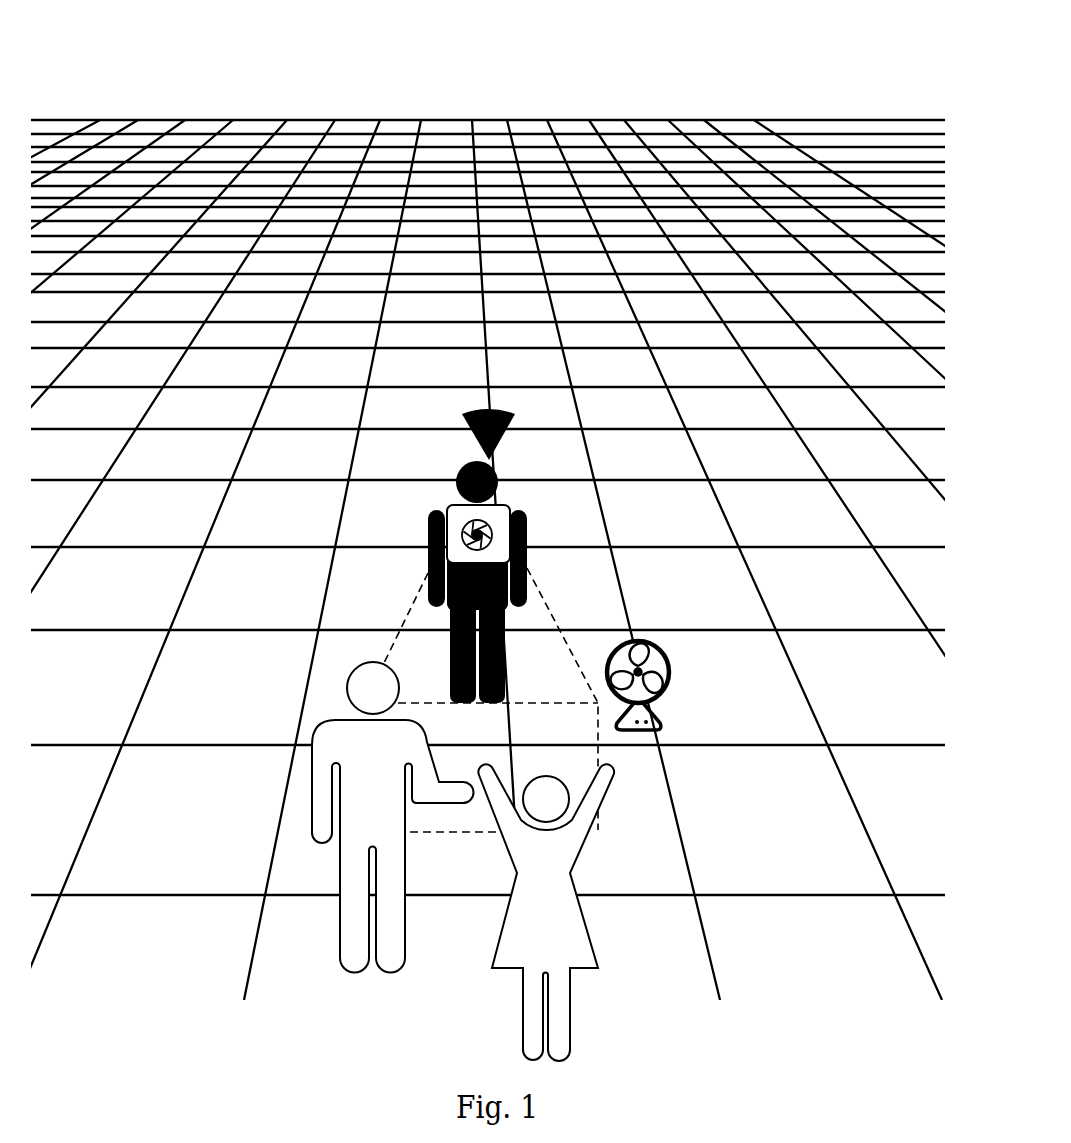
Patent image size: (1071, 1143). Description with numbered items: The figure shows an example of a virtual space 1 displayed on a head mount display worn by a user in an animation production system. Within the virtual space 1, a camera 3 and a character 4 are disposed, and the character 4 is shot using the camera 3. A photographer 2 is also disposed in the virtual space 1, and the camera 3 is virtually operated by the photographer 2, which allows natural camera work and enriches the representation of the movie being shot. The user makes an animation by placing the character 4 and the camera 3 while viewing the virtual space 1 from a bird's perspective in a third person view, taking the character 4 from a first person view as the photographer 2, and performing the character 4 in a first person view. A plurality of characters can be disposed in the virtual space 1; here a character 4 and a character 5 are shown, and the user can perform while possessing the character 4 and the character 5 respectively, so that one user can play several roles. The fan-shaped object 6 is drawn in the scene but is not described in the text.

The virtual space 1 is at (783, 80).
The photographer 2 is at (454, 484).
The camera 3 is at (506, 523).
The character 4 is at (312, 778).
The character 5 is at (583, 845).
The fan (object) 6 is at (671, 665).